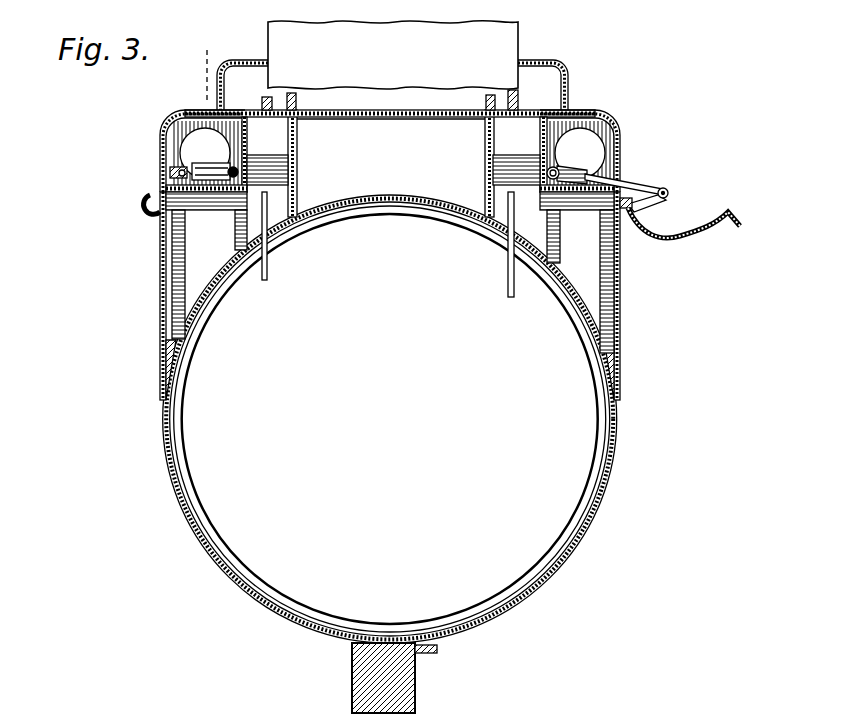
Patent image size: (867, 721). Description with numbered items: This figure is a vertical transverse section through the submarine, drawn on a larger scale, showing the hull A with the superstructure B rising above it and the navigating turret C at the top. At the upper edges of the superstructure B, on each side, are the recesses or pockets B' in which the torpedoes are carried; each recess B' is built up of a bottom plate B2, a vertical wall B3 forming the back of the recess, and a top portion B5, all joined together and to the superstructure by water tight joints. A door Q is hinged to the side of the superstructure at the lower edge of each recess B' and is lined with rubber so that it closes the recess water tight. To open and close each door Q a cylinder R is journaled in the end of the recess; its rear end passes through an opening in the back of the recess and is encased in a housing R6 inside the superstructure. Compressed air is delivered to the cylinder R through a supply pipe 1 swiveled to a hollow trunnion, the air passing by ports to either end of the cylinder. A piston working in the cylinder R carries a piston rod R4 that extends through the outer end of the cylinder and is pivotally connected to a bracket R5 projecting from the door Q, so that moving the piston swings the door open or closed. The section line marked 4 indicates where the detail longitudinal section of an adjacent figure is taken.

The hull A is at (163, 462).
The superstructure B is at (403, 220).
The recess B' is at (404, 151).
The bottom plate B2 is at (216, 194).
The vertical wall B3 is at (244, 135).
The top portion B5 is at (236, 108).
The navigating turret C is at (393, 55).
The cylinder R is at (635, 140).
The piston rod R4 is at (634, 185).
The bracket R5 is at (668, 194).
The housing R6 is at (298, 158).
The door Q is at (679, 238).
The compressed air supply pipe 1 is at (268, 262).
The center line 4 is at (228, 323).